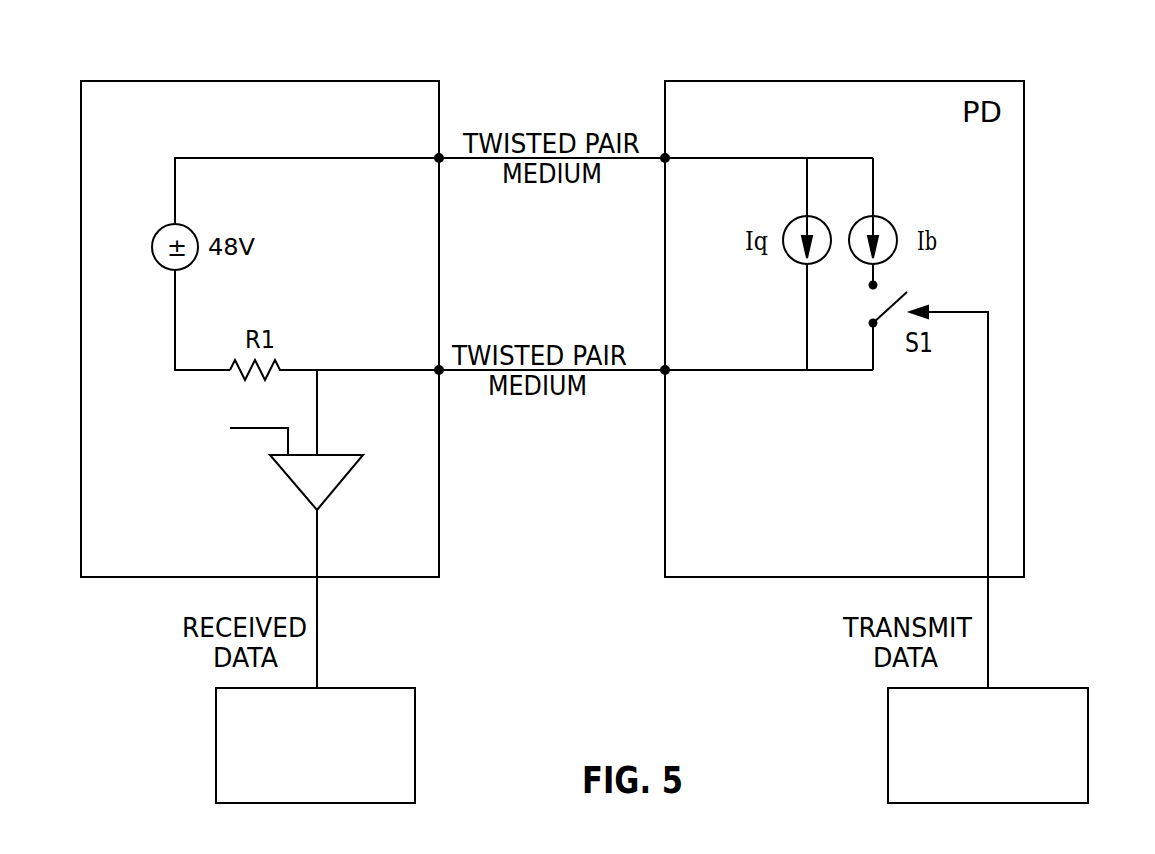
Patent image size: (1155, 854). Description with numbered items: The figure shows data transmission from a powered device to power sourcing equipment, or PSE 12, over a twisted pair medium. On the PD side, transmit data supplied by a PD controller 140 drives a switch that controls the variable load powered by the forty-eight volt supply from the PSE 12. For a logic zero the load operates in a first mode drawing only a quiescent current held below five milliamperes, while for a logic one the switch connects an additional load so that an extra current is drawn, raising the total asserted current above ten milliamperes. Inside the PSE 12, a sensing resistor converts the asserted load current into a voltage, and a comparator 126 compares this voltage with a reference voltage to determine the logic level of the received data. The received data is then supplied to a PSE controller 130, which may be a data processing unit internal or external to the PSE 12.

The PSE 12 is at (260, 80).
The comparator 126 is at (343, 489).
The PSE controller 130 is at (418, 743).
The PD controller 140 is at (1090, 743).